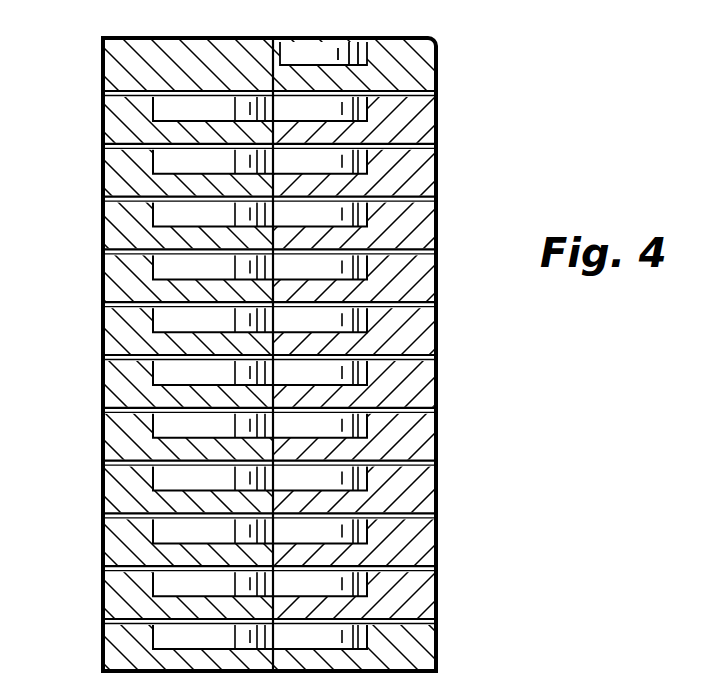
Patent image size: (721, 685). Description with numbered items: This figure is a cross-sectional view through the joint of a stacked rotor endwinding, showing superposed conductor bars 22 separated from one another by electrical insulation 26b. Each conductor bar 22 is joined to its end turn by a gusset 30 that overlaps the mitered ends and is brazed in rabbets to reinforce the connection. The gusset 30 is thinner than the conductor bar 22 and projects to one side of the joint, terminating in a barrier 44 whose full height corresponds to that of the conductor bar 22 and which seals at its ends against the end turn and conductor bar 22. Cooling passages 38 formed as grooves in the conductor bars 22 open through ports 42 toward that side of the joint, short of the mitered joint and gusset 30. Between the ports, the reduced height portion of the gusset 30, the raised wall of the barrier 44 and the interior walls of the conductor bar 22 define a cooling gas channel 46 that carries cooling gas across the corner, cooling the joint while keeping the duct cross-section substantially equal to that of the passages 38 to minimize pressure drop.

The conductor bar 22 is at (104, 181).
The electrical insulation 26b is at (104, 143).
The gusset 30 is at (439, 246).
The cooling passage 38 is at (162, 157).
The port 42 is at (240, 213).
The barrier 44 is at (438, 227).
The cooling gas channel 46 is at (352, 145).